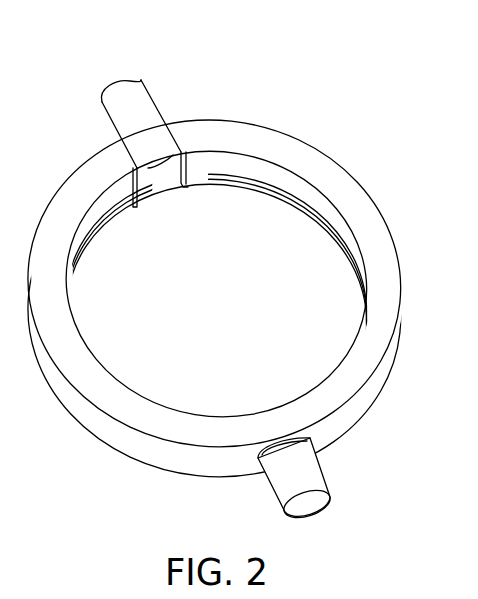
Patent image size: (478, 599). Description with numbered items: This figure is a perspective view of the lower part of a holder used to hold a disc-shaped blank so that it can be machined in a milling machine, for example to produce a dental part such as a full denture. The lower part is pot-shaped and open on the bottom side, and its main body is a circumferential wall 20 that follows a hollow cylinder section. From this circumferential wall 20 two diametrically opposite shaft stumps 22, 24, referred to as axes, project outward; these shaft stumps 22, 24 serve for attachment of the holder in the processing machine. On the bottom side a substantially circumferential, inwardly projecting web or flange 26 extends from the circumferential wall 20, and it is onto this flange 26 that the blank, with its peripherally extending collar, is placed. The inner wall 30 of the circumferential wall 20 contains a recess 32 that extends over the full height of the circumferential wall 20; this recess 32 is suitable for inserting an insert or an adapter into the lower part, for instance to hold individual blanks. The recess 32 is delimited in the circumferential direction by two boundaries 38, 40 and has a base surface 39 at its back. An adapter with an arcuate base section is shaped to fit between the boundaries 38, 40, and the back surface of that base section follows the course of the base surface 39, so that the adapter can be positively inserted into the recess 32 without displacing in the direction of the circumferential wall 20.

The circumferential wall 20 is at (385, 247).
The shaft stump 22 is at (138, 92).
The shaft stump 24 is at (307, 502).
The flange 26 is at (102, 232).
The inner wall 30 is at (323, 202).
The recess 32 is at (162, 169).
The boundary 38 is at (132, 182).
The base surface 39 is at (152, 167).
The boundary 40 is at (187, 153).